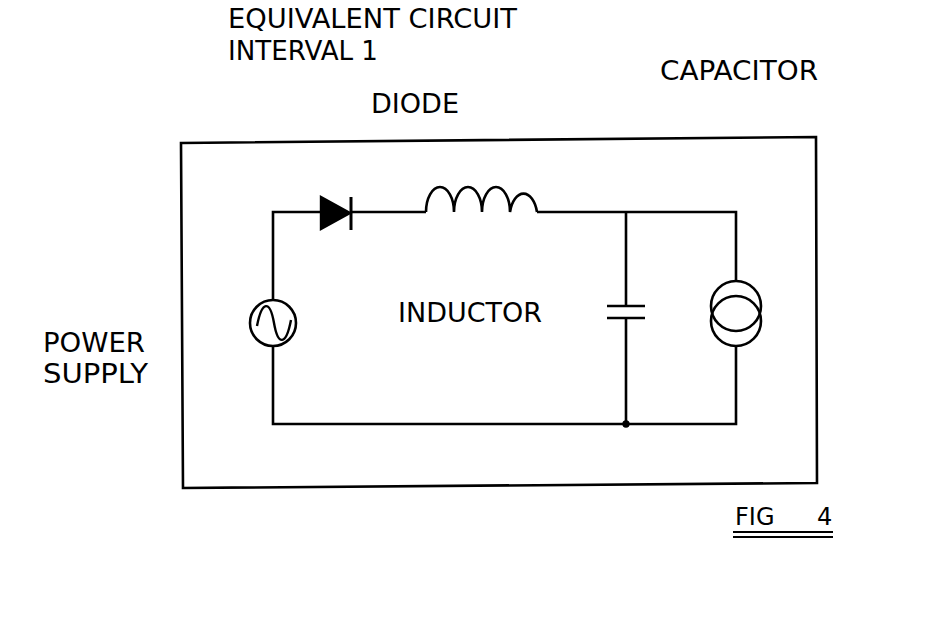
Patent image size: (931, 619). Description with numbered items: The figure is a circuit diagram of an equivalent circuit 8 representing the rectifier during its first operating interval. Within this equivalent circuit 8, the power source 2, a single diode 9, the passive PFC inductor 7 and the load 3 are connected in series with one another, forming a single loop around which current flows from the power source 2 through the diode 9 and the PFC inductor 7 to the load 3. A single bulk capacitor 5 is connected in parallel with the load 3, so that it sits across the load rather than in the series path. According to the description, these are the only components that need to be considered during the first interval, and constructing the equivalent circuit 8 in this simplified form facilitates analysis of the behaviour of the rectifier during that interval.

The equivalent circuit 8 is at (246, 139).
The power source 2 is at (251, 325).
The single diode 9 is at (339, 205).
The passive PFC inductor 7 is at (481, 214).
The single bulk capacitor 5 is at (634, 305).
The load 3 is at (742, 287).